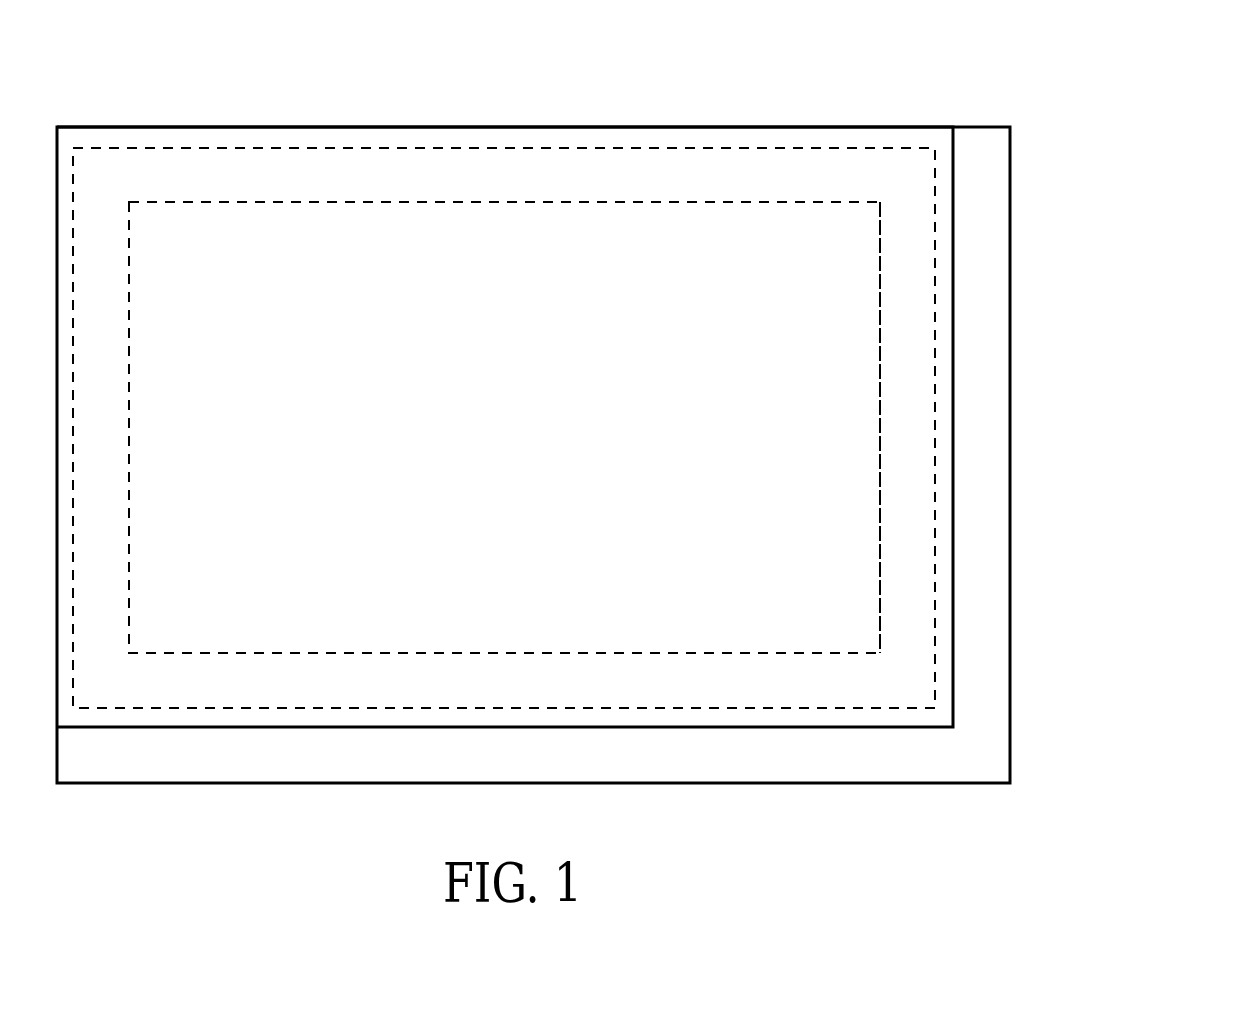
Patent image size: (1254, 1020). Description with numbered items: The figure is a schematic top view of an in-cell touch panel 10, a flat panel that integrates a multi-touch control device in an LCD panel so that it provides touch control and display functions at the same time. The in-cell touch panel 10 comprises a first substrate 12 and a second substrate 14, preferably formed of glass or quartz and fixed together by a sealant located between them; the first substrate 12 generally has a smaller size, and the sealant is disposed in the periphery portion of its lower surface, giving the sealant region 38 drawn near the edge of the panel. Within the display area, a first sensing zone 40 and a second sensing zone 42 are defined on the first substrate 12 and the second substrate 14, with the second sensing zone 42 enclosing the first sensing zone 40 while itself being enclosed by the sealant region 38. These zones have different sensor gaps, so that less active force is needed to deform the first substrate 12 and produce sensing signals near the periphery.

The in-cell touch panel 10 is at (1094, 112).
The first substrate 12 is at (953, 198).
The second substrate 14 is at (1010, 277).
The sealant region 38 is at (945, 458).
The first sensing zone 40 is at (858, 376).
The second sensing zone 42 is at (912, 567).